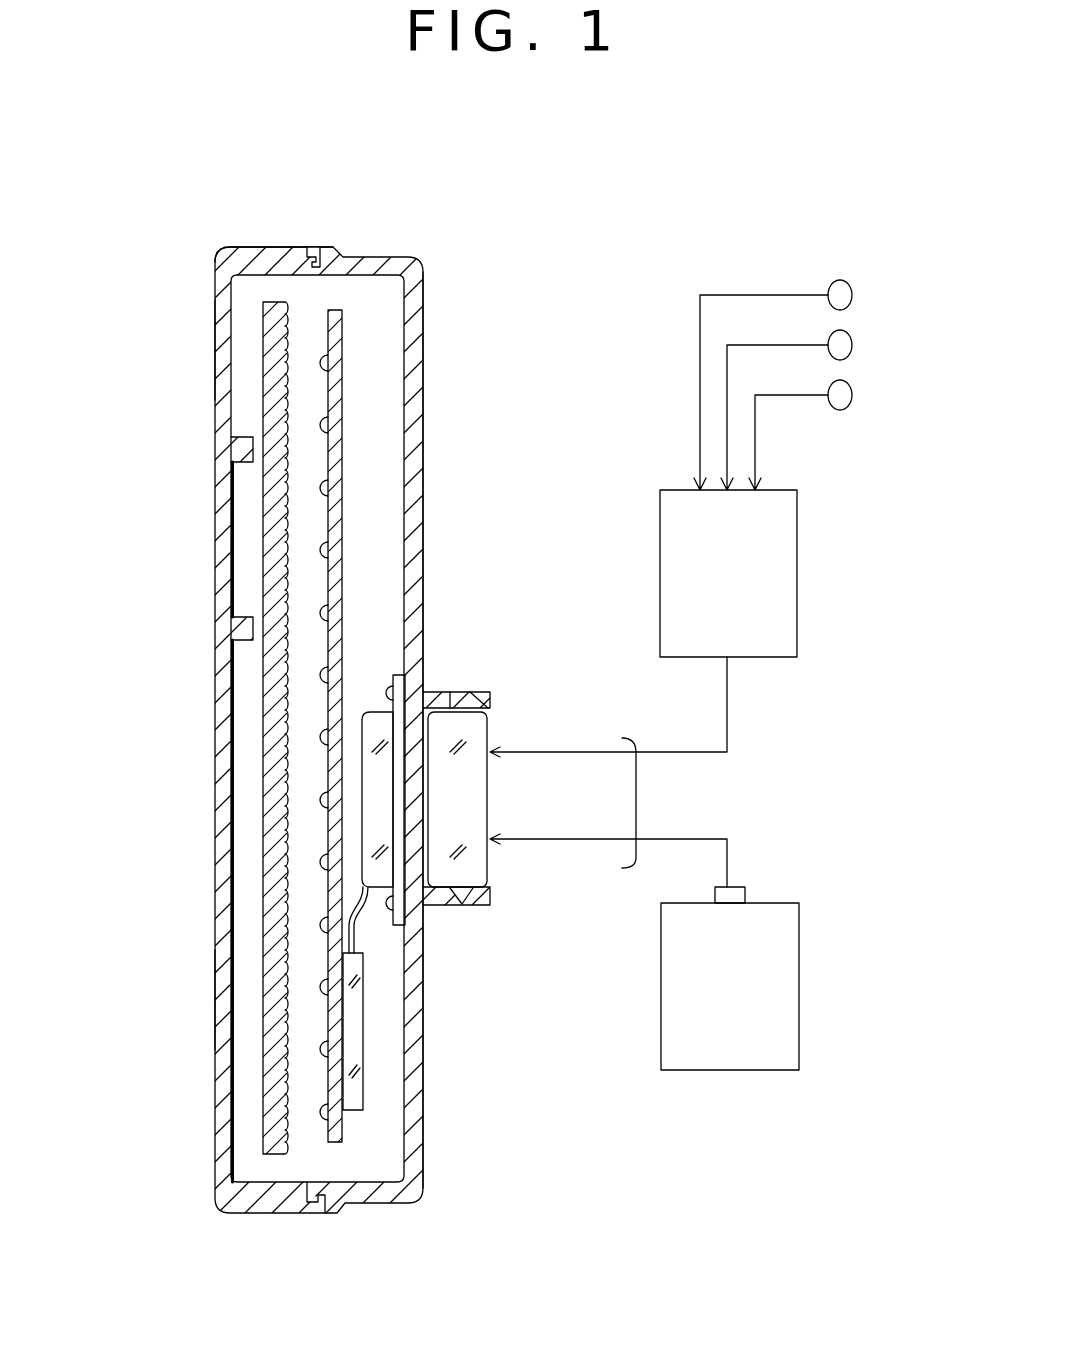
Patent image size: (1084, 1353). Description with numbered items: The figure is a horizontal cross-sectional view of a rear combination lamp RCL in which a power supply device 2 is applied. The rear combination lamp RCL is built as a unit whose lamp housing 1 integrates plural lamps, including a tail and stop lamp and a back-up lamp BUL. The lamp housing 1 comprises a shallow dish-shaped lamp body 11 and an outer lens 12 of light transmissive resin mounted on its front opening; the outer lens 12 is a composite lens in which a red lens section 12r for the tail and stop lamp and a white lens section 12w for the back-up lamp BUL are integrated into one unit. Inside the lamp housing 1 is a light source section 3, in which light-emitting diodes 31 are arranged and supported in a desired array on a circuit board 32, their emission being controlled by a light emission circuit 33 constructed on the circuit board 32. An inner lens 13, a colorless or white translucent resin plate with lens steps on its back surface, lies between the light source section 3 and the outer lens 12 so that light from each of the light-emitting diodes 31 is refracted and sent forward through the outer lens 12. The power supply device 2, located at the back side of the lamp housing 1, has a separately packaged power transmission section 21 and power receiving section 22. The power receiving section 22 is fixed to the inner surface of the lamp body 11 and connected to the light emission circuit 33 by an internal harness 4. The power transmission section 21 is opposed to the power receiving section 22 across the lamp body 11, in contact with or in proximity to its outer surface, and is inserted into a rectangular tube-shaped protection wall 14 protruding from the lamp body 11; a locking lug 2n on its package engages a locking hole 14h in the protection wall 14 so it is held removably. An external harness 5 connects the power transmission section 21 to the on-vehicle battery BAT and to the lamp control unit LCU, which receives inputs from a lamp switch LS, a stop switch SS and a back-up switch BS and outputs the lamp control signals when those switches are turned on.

The lamp housing 1 is at (423, 288).
The lamp body 11 is at (423, 440).
The outer lens 12 is at (218, 264).
The red lens section 12r is at (216, 346).
The white lens section 12w is at (216, 573).
The inner lens 13 is at (263, 1070).
The protection wall 14 is at (483, 935).
The locking hole 14h is at (457, 899).
The power supply device 2 is at (467, 763).
The power transmission section 21 is at (471, 800).
The power receiving section 22 is at (380, 748).
The locking lug 2n is at (490, 698).
The light source section 3 is at (310, 784).
The light-emitting diodes 31 is at (320, 550).
The circuit board 32 is at (338, 400).
The light emission circuit 33 is at (352, 1100).
The internal harness 4 is at (358, 940).
The external harness 5 is at (637, 803).
The rear combination lamp RCL is at (342, 241).
The back-up lamp BUL is at (186, 532).
The lamp switch LS is at (852, 295).
The stop switch SS is at (852, 345).
The back-up switch BS is at (852, 395).
The lamp control unit LCU is at (797, 643).
The battery BAT is at (770, 1070).